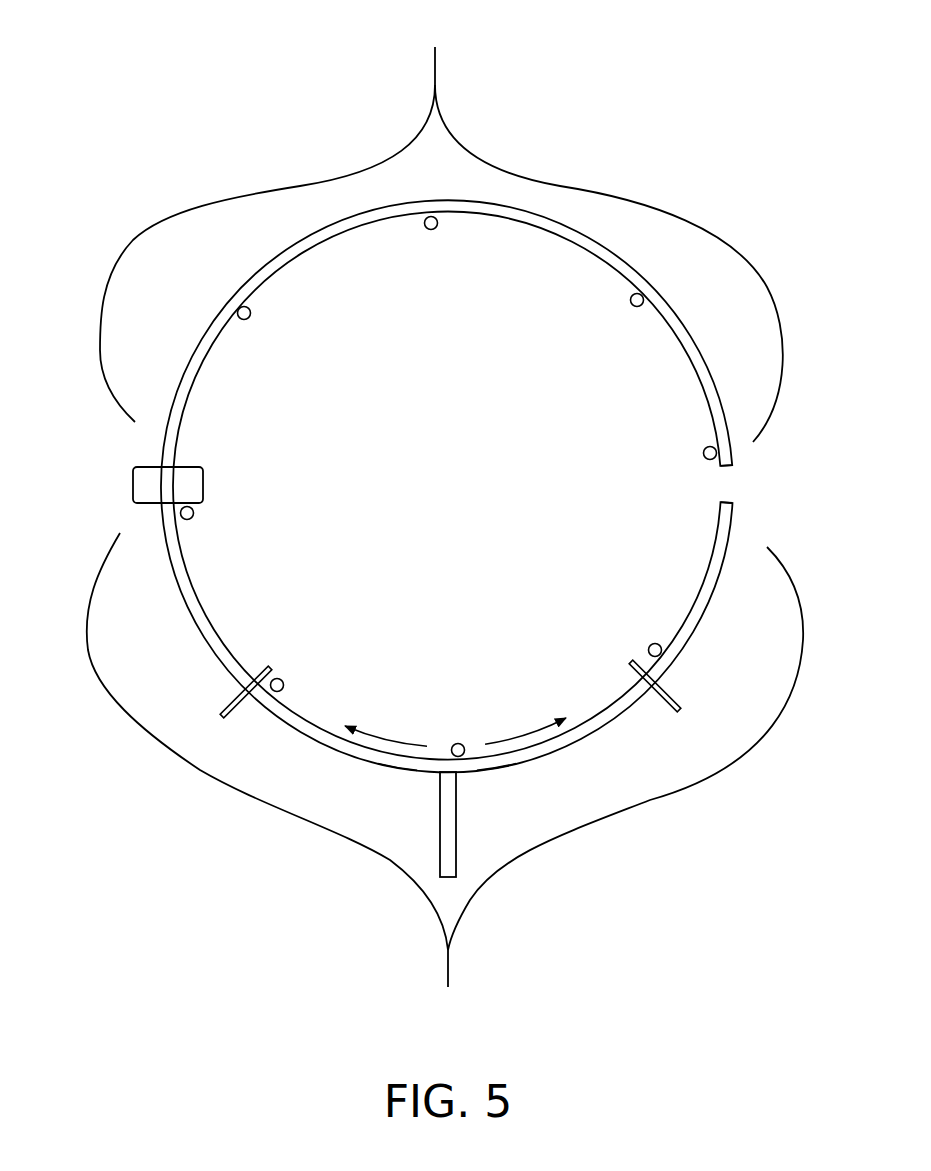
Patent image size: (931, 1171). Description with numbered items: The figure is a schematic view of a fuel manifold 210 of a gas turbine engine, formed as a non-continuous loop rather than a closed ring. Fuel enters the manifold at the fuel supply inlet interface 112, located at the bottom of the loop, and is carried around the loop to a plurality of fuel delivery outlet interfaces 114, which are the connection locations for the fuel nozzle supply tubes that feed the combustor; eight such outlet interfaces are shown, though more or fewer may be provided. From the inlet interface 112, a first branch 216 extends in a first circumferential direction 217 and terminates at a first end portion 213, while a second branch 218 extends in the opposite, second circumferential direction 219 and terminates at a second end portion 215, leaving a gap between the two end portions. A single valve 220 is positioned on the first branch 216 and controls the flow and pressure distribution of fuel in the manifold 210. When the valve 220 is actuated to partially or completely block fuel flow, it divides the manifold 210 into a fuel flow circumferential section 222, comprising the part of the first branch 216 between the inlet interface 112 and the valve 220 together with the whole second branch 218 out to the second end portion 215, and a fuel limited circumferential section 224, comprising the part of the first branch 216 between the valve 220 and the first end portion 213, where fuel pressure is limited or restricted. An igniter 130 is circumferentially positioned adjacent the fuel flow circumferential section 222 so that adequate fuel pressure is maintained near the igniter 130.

The fuel manifold 210 is at (130, 92).
The fuel limited circumferential section 224 is at (441, 230).
The fuel flow circumferential section 222 is at (445, 777).
The fuel delivery outlet interfaces 114 is at (435, 252).
The valve 220 is at (150, 487).
The first end portion 213 is at (723, 467).
The second end portion 215 is at (728, 495).
The igniter 130 is at (233, 717).
The fuel supply inlet interface 112 is at (445, 835).
The first circumferential direction 217 is at (383, 737).
The second circumferential direction 219 is at (532, 727).
The first branch 216 is at (410, 762).
The second branch 218 is at (492, 762).